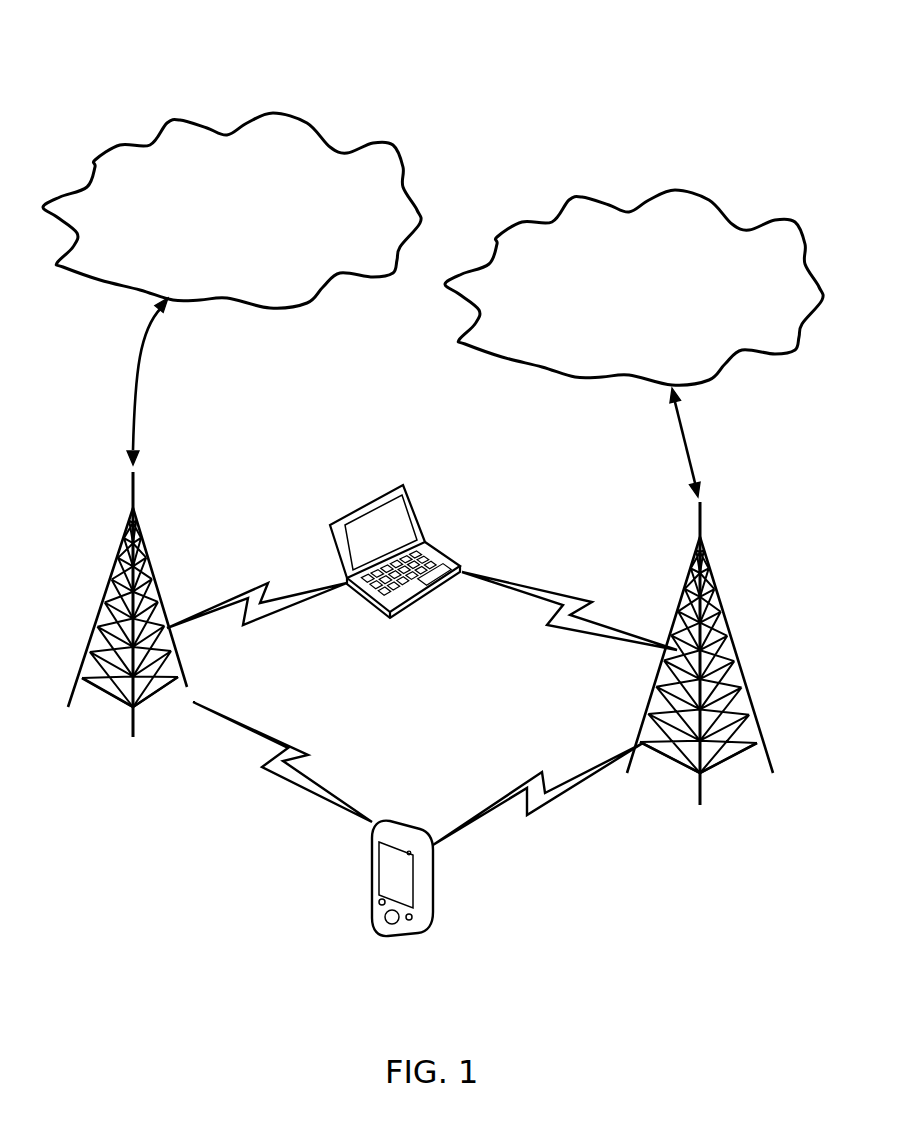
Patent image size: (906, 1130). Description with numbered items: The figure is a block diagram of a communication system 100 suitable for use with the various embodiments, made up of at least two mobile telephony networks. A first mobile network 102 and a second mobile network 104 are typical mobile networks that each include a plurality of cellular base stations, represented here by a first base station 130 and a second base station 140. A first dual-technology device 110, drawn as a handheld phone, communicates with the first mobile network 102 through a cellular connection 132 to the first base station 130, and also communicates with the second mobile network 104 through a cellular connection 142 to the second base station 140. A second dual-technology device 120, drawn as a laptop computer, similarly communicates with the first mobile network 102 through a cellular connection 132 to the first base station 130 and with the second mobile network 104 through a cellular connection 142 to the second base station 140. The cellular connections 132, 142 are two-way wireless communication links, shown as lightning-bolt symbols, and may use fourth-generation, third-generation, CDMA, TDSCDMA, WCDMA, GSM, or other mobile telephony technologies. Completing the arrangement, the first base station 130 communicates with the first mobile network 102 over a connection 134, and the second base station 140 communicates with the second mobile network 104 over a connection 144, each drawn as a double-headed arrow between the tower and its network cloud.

The communication system 100 is at (142, 72).
The first mobile network 102 is at (287, 308).
The second mobile network 104 is at (570, 202).
The first dual-technology device 110 is at (372, 915).
The second dual-technology device 120 is at (340, 522).
The first base station 130 is at (123, 527).
The cellular connection 132 is at (265, 585).
The connection 134 is at (137, 370).
The second base station 140 is at (690, 568).
The cellular connection 142 is at (512, 590).
The connection 144 is at (682, 437).